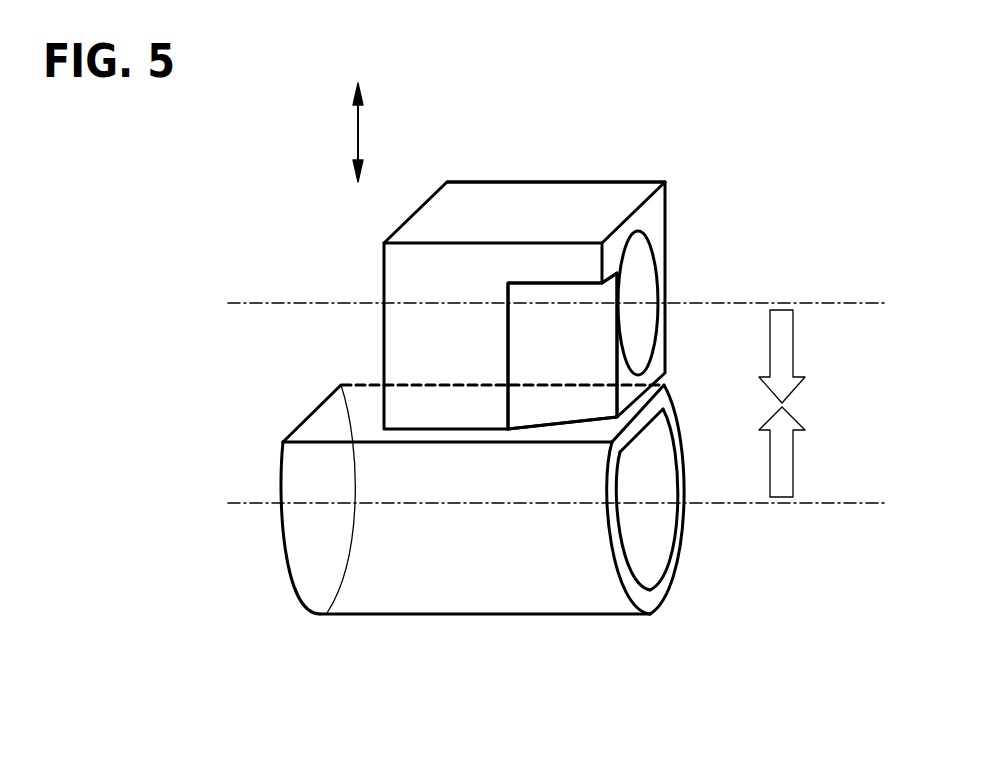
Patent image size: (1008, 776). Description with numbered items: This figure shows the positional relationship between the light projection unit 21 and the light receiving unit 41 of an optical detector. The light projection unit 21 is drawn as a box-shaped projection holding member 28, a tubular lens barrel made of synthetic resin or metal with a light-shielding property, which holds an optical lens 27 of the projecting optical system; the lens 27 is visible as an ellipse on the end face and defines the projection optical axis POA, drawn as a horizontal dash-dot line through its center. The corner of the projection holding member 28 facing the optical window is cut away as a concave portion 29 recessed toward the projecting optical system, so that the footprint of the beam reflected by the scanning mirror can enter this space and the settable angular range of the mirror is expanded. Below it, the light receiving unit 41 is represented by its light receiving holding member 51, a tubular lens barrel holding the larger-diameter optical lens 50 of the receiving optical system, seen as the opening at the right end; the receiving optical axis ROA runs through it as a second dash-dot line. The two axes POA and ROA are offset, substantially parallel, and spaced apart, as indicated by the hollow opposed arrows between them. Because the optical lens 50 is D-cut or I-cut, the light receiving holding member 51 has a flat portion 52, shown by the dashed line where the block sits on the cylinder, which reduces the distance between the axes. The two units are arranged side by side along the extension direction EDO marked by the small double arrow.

The light projection unit 21 is at (349, 233).
The optical lens 27 is at (647, 268).
The projection holding member 28 is at (535, 182).
The concave portion 29 is at (558, 327).
The light receiving unit 41 is at (450, 507).
The optical lens 50 is at (662, 533).
The light receiving holding member 51 is at (442, 615).
The flat portion 52 is at (367, 397).
The extension direction EDO is at (357, 131).
The projection optical axis POA is at (833, 303).
The receiving optical axis ROA is at (833, 505).